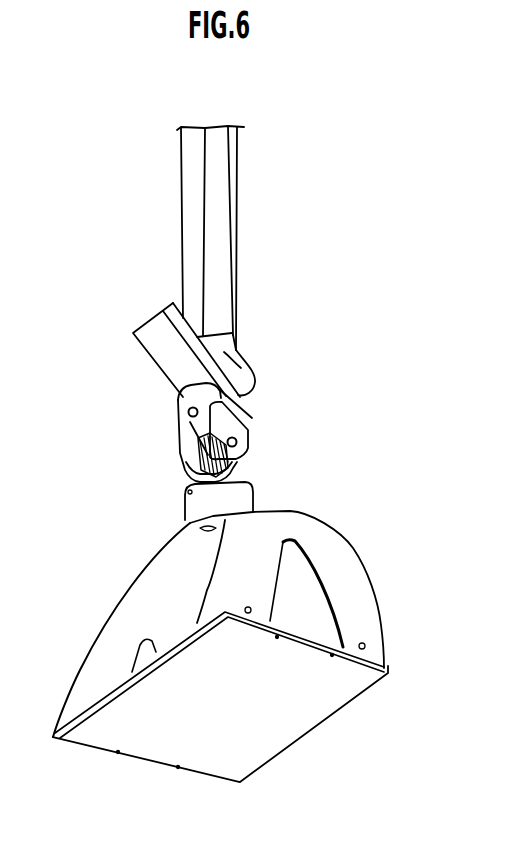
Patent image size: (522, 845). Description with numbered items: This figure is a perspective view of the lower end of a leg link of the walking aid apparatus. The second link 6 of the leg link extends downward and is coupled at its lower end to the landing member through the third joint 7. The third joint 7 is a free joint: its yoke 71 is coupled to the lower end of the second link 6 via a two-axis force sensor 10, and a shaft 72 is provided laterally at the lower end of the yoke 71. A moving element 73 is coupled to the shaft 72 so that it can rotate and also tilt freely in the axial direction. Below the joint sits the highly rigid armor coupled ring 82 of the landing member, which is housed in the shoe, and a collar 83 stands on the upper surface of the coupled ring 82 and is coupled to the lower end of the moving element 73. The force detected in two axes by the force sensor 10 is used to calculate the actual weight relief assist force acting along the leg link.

The second link 6 is at (222, 262).
The 2-axis force sensor 10 is at (247, 372).
The third joint 7 is at (268, 442).
The yoke 71 is at (243, 425).
The shaft 72 is at (240, 460).
The moving element 73 is at (197, 456).
The collar 83 is at (255, 508).
The coupled ring 82 is at (360, 575).